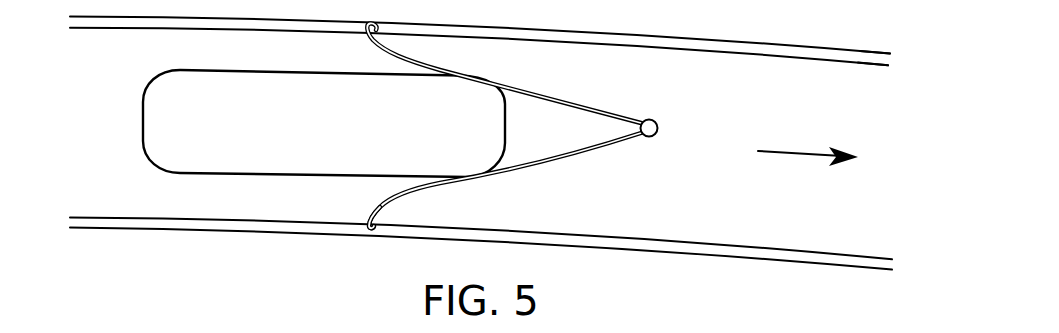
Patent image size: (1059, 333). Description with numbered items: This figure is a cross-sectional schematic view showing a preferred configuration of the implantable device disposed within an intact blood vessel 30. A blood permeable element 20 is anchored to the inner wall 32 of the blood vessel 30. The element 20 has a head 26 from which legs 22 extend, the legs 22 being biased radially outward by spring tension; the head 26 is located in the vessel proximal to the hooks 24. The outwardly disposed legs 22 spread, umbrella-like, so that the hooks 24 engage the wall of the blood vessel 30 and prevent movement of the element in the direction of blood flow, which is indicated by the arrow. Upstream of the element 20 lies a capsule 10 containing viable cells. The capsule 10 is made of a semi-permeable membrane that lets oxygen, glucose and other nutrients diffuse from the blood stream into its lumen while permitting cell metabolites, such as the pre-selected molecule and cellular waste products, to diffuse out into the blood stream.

The capsule 10 is at (126, 97).
The blood permeable element 20 is at (575, 83).
The legs 22 is at (540, 161).
The hooks 24 is at (369, 211).
The head 26 is at (650, 121).
The blood vessel 30 is at (778, 43).
The inner wall 32 is at (886, 66).